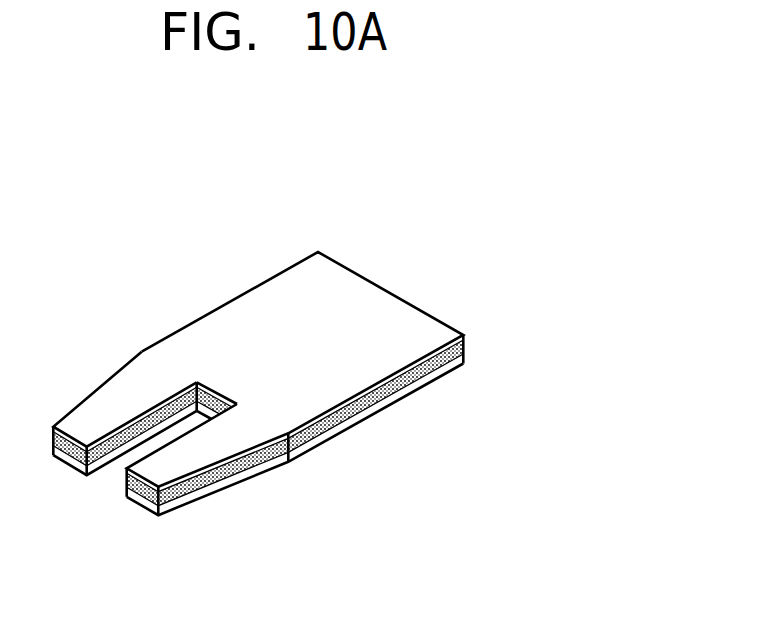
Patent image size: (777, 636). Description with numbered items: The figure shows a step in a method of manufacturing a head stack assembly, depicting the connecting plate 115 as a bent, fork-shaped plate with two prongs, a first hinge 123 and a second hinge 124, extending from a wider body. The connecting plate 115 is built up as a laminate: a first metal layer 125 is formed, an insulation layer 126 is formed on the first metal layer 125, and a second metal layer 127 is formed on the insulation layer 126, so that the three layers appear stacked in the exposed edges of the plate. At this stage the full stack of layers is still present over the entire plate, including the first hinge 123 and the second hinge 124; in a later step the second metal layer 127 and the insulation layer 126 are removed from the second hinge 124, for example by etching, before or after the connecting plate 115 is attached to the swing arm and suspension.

The connecting plate 115 is at (458, 313).
The first hinge 123 is at (185, 460).
The second hinge 124 is at (100, 408).
The first metal layer 125 is at (322, 424).
The insulation layer 126 is at (362, 422).
The second metal layer 127 is at (392, 405).